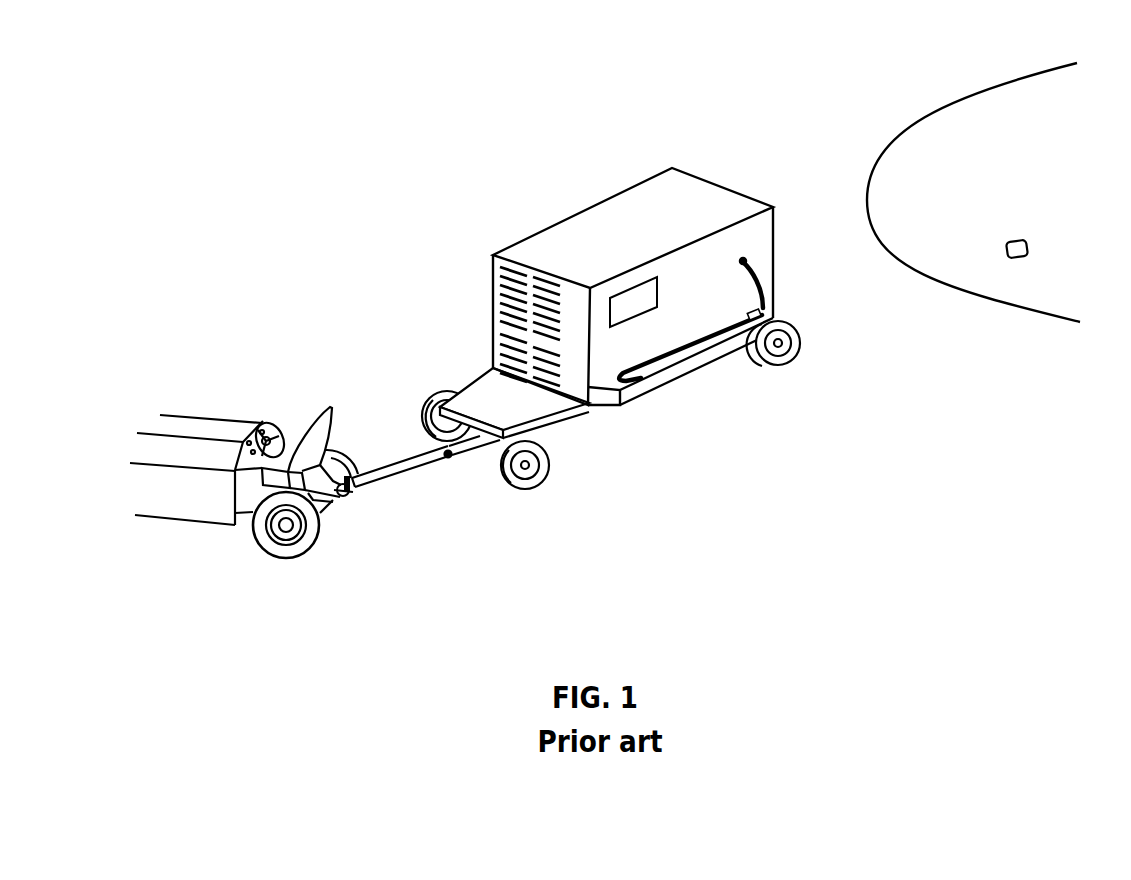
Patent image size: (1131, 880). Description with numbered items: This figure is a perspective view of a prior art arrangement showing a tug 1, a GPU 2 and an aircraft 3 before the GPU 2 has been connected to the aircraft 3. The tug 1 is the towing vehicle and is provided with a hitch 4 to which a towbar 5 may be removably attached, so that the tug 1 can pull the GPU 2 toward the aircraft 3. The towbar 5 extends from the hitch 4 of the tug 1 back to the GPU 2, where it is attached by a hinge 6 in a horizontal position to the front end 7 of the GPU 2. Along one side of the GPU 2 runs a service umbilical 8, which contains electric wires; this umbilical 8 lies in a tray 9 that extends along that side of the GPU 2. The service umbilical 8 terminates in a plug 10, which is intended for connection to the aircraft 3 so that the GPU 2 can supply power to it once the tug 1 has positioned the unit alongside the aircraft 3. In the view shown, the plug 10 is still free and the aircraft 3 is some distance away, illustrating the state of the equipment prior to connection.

The tug 1 is at (242, 378).
The GPU 2 is at (513, 222).
The aircraft 3 is at (878, 125).
The hitch 4 is at (333, 502).
The towbar 5 is at (382, 477).
The hinge 6 is at (449, 459).
The front end 7 is at (487, 417).
The service umbilical 8 is at (715, 335).
The tray 9 is at (643, 383).
The plug 10 is at (800, 338).